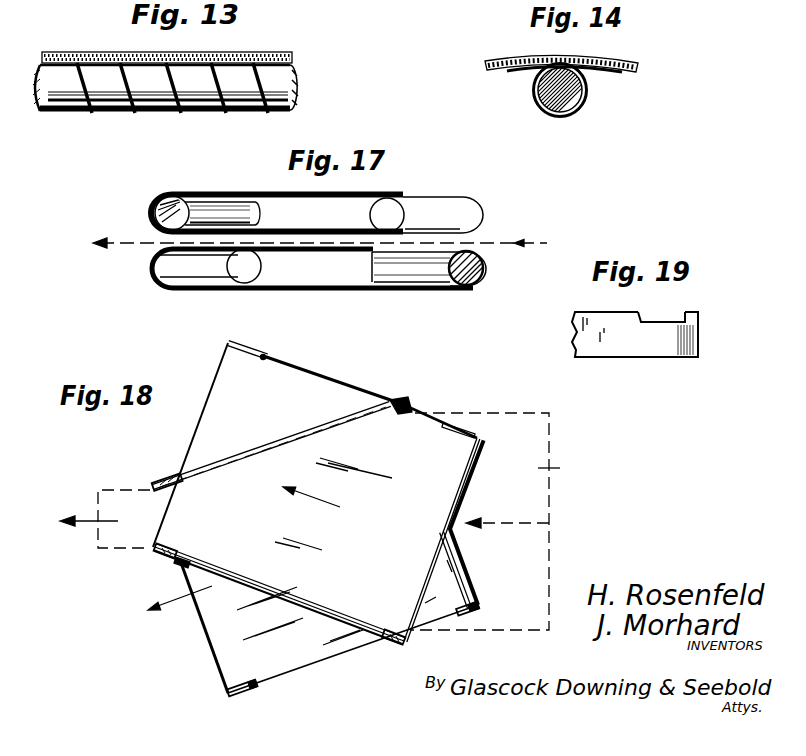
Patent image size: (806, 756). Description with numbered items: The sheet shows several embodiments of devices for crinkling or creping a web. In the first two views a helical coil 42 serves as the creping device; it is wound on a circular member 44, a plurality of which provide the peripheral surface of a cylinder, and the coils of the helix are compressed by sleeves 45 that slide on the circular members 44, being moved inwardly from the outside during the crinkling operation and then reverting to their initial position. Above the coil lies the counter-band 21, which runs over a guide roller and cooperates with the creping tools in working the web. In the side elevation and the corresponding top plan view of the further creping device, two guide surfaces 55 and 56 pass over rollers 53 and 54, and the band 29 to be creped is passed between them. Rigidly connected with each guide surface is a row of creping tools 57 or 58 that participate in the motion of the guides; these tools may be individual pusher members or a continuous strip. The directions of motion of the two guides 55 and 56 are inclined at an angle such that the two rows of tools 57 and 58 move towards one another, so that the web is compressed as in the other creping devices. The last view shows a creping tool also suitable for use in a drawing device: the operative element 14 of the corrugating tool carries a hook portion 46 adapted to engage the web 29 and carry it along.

In FIG. 19, the operative element 14 is at (655, 346).
In FIG. 13, the counter-band 21 is at (50, 52).
In FIG. 14, the counter-band 21 is at (486, 63).
In FIG. 17, the band 29 is at (519, 243).
In FIG. 18, the band 29 is at (93, 568).
In FIG. 13, the helical coil 42 is at (267, 53).
In FIG. 13, the circular member 44 is at (113, 93).
In FIG. 14, the circular member 44 is at (581, 105).
In FIG. 14, the sleeve 45 is at (538, 101).
In FIG. 19, the hook portion 46 is at (676, 316).
In FIG. 17, the roller 53 is at (250, 273).
In FIG. 18, the roller 53 is at (238, 699).
In FIG. 17, the roller 54 is at (156, 208).
In FIG. 18, the roller 54 is at (166, 560).
In FIG. 17, the guide surface 55 is at (425, 293).
In FIG. 18, the guide surface 55 is at (312, 655).
In FIG. 17, the guide surface 56 is at (447, 203).
In FIG. 18, the guide surface 56 is at (343, 397).
In FIG. 17, the creping tool 57 is at (210, 191).
In FIG. 18, the creping tool 57 is at (338, 616).
In FIG. 17, the creping tool 58 is at (352, 293).
In FIG. 18, the creping tool 58 is at (153, 490).